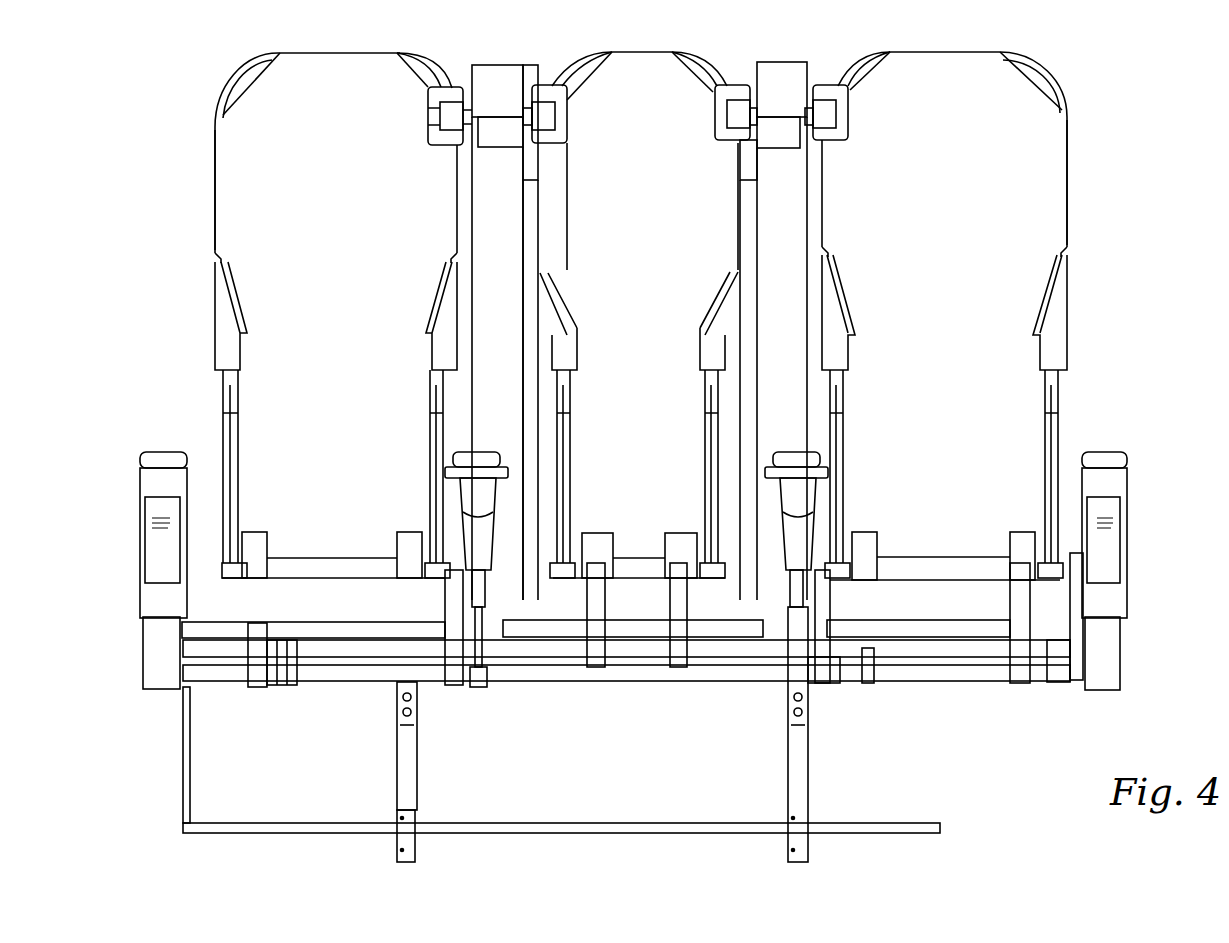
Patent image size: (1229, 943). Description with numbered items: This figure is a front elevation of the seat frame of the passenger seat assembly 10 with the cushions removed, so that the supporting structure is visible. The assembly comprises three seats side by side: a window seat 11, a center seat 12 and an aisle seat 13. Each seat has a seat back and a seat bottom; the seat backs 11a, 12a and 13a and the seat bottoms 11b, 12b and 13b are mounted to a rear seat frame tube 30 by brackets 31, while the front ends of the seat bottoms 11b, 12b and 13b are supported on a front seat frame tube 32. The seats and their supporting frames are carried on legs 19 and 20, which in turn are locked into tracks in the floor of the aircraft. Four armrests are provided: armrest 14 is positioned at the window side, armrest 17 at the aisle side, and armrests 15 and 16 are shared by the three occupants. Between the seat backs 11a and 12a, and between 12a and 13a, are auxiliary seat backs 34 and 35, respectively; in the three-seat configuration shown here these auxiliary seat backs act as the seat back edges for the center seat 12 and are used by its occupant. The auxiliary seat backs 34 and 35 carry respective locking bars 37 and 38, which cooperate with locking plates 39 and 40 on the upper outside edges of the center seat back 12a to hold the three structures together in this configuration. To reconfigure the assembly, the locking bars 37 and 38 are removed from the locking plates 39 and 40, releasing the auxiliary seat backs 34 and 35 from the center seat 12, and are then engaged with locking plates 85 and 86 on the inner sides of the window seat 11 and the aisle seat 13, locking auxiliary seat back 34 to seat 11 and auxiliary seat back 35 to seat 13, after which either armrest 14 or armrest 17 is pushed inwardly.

The seat assembly 10 is at (176, 169).
The window seat 11 is at (347, 236).
The seat back 11a is at (222, 235).
The seat bottom 11b is at (197, 630).
The center seat 12 is at (652, 231).
The seat back 12a is at (637, 60).
The seat bottom 12b is at (633, 627).
The aisle seat 13 is at (955, 235).
The seat back 13a is at (1062, 148).
The seat bottom 13b is at (957, 627).
The armrest 14 is at (148, 482).
The armrest 15 is at (478, 456).
The armrest 16 is at (790, 458).
The armrest 17 is at (1113, 483).
The leg 19 is at (397, 786).
The leg 20 is at (797, 783).
The rear seat frame tube 30 is at (875, 657).
The brackets 31 is at (453, 608).
The front seat frame tube 32 is at (833, 645).
The auxiliary seat back 34 is at (487, 73).
The auxiliary seat back 35 is at (785, 67).
The locking bar 37 is at (519, 117).
The locking bar 38 is at (837, 93).
The locking plate 39 is at (545, 92).
The locking plate 40 is at (733, 90).
The locking plate 85 is at (442, 92).
The locking plate 86 is at (848, 92).